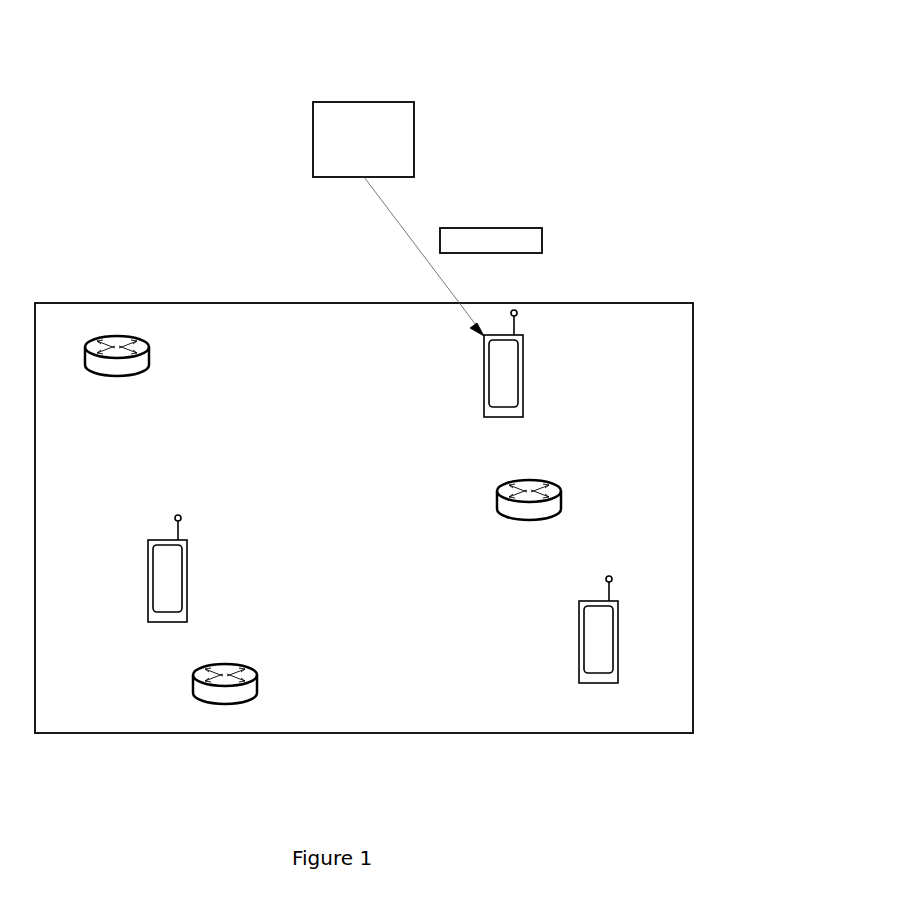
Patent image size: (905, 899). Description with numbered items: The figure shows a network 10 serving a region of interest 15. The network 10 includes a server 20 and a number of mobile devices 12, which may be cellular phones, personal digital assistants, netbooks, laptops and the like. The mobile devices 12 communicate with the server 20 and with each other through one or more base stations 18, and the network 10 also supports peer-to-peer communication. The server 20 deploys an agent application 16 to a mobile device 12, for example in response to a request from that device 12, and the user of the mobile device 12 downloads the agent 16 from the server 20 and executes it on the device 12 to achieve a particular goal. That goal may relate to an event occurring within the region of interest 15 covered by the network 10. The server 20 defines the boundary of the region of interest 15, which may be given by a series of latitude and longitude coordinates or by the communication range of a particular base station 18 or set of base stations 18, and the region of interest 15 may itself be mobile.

The network 10 is at (150, 84).
The mobile device 12 is at (483, 377).
The region of interest 15 is at (694, 488).
The agent application 16 is at (543, 242).
The base station 18 is at (150, 360).
The server 20 is at (415, 140).